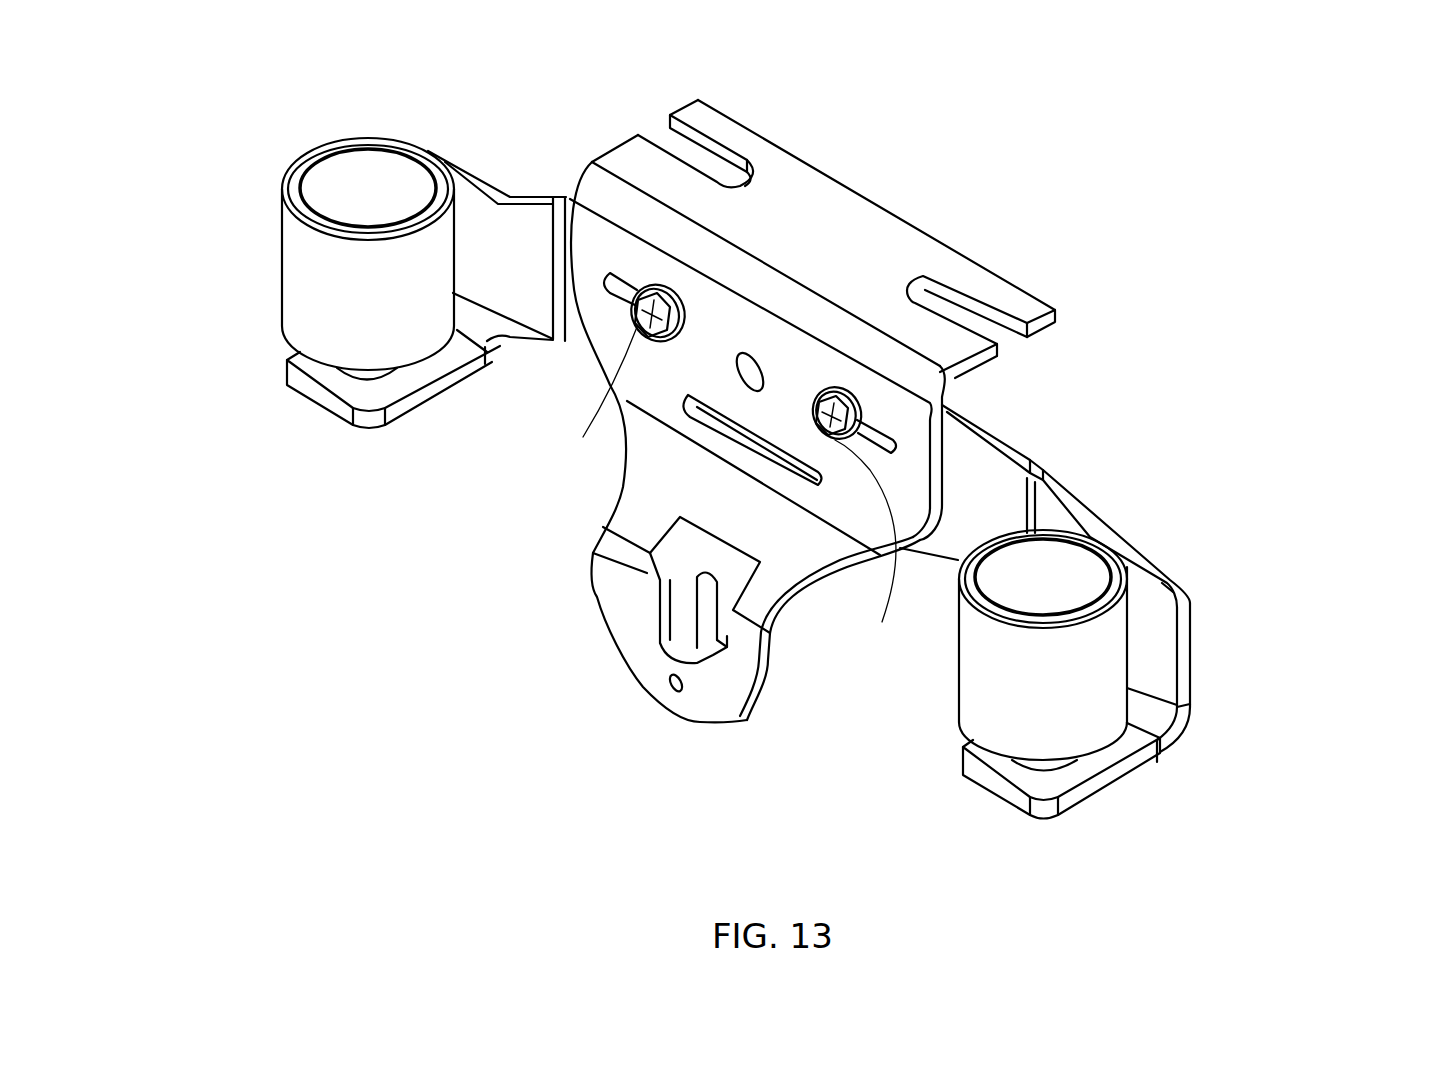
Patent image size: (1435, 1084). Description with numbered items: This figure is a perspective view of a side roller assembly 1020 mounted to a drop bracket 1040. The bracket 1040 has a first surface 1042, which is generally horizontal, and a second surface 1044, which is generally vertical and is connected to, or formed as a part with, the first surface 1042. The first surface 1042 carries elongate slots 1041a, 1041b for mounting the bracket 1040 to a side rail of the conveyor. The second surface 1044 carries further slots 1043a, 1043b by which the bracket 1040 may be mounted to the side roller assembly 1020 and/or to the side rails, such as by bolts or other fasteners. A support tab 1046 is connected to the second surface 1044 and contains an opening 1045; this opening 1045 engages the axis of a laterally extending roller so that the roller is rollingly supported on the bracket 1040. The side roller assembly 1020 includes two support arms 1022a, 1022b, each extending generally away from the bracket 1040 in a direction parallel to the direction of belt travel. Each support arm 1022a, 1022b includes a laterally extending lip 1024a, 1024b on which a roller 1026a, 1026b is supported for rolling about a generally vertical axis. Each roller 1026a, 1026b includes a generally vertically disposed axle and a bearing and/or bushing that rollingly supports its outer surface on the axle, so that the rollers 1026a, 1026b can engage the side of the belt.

The side roller assembly 1020 is at (1164, 566).
The support arm 1022a is at (465, 172).
The support arm 1022b is at (1020, 457).
The laterally extending lip 1024a is at (368, 428).
The laterally extending lip 1024b is at (1043, 818).
The roller 1026a is at (283, 266).
The roller 1026b is at (1057, 707).
The drop bracket 1040 is at (703, 722).
The slot 1041a is at (697, 140).
The slot 1041b is at (982, 297).
The first surface 1042 is at (832, 217).
The slot 1043a is at (623, 280).
The slot 1043b is at (893, 432).
The second surface 1044 is at (597, 347).
The opening 1045 is at (653, 634).
The support tab 1046 is at (765, 692).